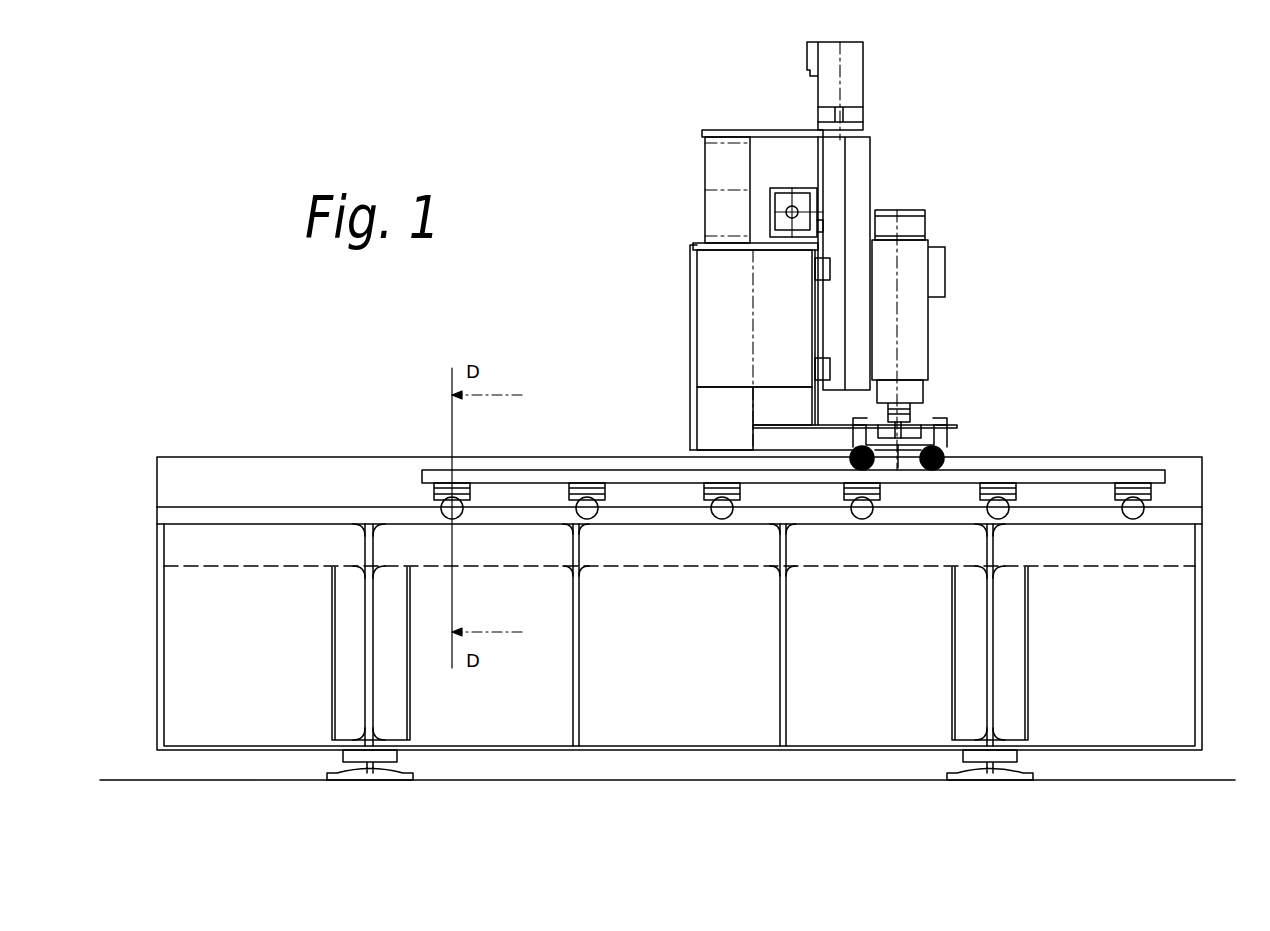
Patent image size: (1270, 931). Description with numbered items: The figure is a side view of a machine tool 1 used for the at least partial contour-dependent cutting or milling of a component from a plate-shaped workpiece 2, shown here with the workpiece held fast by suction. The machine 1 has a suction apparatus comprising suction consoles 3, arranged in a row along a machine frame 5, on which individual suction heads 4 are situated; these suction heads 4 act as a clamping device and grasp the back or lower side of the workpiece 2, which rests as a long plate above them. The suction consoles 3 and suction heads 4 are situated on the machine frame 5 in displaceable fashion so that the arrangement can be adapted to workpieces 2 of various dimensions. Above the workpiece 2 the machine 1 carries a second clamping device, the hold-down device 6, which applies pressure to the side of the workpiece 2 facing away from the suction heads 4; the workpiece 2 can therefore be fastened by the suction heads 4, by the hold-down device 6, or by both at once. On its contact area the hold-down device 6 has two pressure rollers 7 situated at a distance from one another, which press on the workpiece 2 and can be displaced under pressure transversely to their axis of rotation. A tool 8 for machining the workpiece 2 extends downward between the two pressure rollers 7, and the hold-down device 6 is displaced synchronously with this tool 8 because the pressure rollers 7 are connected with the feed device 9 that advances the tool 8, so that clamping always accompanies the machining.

The machine tool 1 is at (667, 370).
The workpiece 2 is at (525, 473).
The suction console 3 is at (453, 513).
The suction head 4 is at (433, 495).
The machine frame 5 is at (1193, 657).
The hold-down device 6 is at (948, 418).
The pressure roller 7 is at (851, 457).
The tool 8 is at (902, 468).
The feed device 9 is at (718, 415).